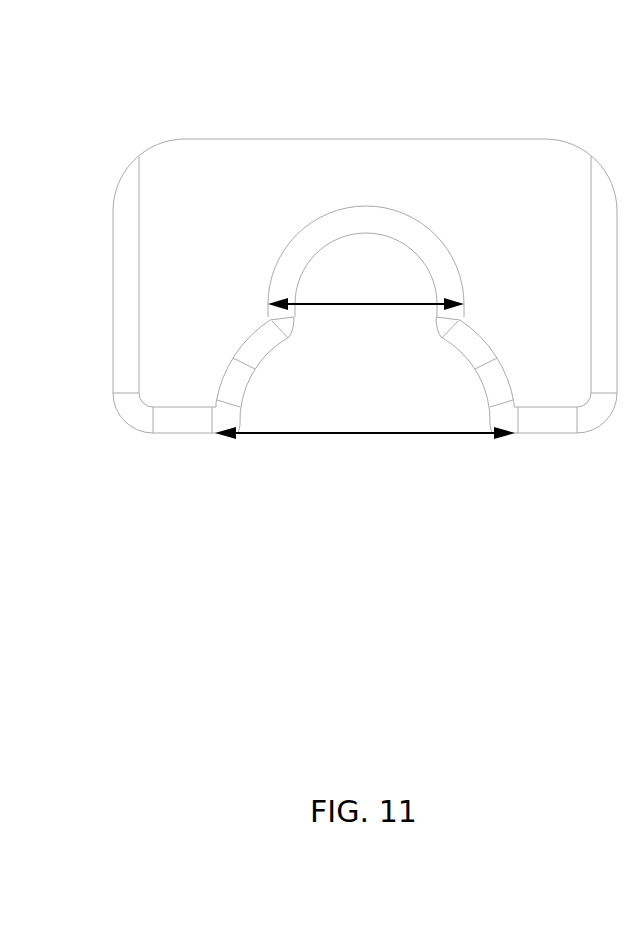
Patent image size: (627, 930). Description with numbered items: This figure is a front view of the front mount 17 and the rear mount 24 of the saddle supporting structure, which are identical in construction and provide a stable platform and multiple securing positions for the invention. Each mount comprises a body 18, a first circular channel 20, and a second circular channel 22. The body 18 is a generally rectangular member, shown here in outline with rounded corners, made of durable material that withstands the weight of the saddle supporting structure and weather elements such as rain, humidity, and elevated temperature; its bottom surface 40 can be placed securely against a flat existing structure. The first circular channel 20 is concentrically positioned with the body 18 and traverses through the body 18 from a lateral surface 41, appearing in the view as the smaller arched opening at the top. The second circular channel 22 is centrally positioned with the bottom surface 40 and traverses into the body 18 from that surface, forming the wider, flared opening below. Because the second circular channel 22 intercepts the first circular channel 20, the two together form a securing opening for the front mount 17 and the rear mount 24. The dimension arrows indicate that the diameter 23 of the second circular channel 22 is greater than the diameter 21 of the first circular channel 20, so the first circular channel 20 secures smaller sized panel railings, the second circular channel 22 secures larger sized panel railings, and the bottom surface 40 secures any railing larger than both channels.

The front mount 17 is at (326, 270).
The rear mount 24 is at (333, 104).
The body 18 is at (153, 209).
The lateral surface 41 is at (365, 281).
The first circular channel 20 is at (422, 261).
The diameter 21 is at (373, 306).
The second circular channel 22 is at (470, 362).
The diameter 23 is at (373, 435).
The bottom surface 40 is at (189, 434).